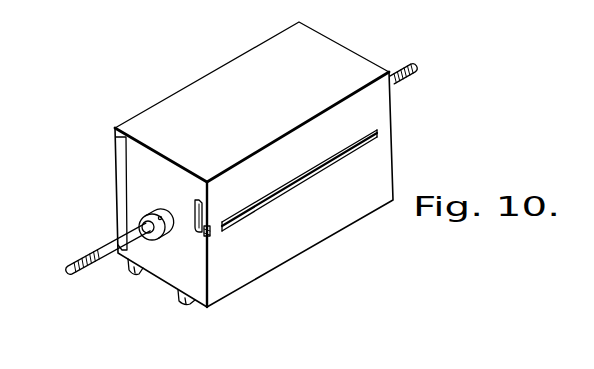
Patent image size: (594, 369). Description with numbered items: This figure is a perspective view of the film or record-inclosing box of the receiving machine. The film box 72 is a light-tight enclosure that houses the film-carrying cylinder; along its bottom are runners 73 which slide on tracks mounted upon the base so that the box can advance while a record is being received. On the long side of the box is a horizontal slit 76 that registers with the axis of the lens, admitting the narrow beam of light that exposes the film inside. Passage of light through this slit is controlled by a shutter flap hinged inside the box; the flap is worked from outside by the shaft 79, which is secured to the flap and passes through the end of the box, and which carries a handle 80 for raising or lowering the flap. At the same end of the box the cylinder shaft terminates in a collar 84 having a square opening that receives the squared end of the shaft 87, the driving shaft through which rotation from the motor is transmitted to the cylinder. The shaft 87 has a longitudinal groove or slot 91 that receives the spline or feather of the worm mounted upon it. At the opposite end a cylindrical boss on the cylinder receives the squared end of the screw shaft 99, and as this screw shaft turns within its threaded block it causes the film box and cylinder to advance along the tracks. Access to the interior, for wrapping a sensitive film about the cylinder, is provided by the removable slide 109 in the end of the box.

The film box 72 is at (254, 164).
The runners 73 is at (178, 298).
The horizontal slit 76 is at (330, 161).
The shaft 79 is at (208, 236).
The handle 80 is at (196, 202).
The collar 84 is at (155, 212).
The shaft 87 is at (120, 237).
The longitudinal groove or slot 91 is at (101, 258).
The screw shaft 99 is at (410, 67).
The slide 109 is at (117, 169).